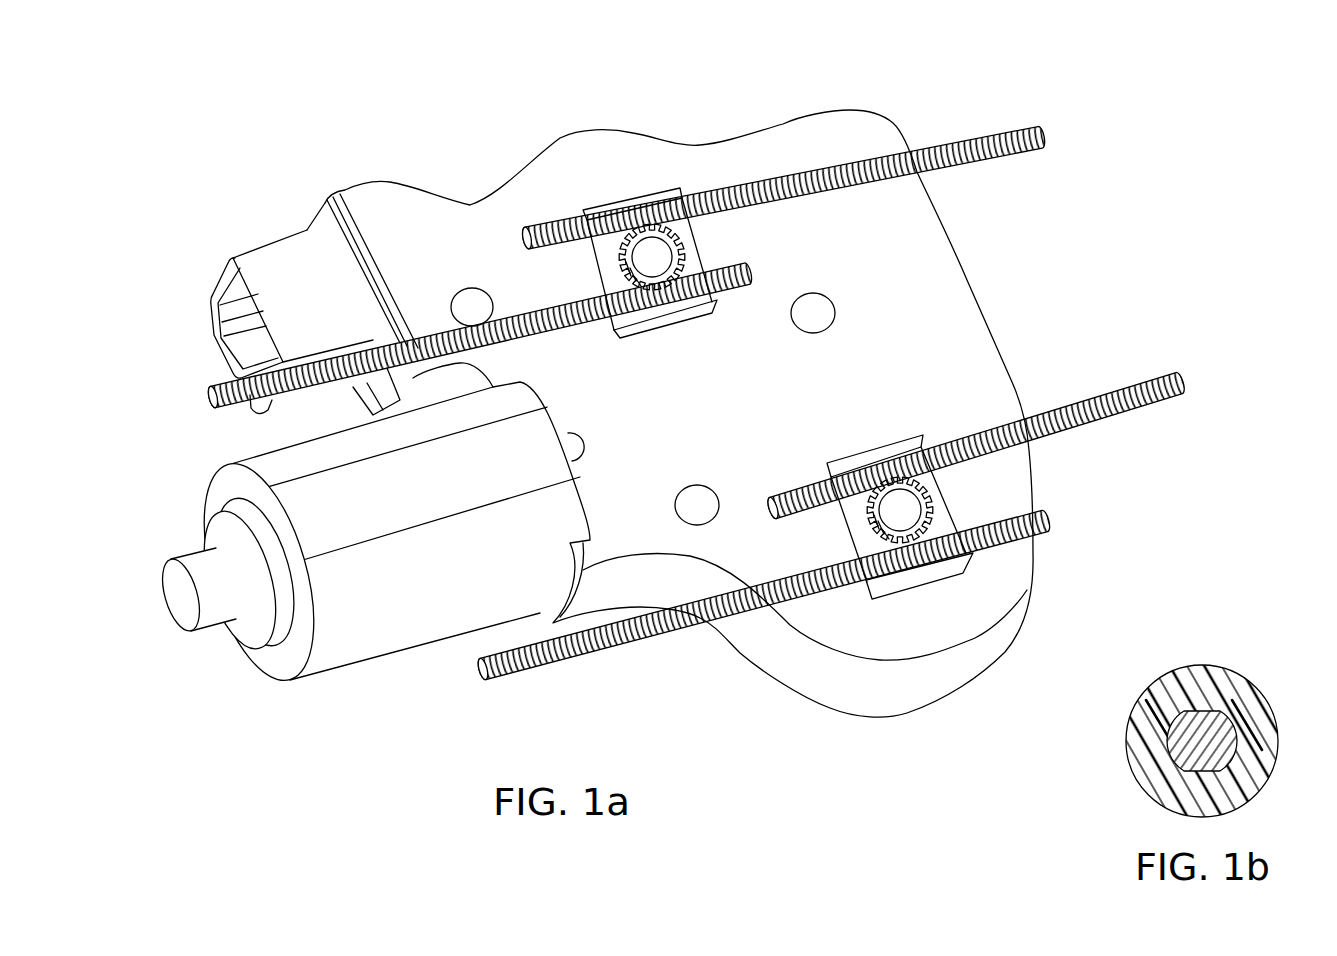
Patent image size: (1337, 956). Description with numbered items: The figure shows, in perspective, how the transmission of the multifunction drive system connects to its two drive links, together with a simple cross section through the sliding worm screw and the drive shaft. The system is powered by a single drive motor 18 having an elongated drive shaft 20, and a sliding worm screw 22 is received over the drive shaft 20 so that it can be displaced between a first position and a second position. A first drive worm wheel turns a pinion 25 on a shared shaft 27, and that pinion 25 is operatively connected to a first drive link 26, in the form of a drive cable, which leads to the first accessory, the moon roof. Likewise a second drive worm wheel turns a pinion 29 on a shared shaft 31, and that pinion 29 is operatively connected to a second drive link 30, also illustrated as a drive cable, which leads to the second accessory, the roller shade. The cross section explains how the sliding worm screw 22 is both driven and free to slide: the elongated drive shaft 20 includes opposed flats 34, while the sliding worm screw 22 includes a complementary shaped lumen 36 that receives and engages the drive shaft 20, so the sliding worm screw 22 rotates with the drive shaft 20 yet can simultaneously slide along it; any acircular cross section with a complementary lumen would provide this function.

In FIG. 1A, the single drive motor 18 is at (382, 627).
In FIG. 1A, the pinion 25 is at (935, 505).
In FIG. 1A, the first drive link 26 is at (1105, 390).
In FIG. 1A, the shared shaft 27 is at (888, 515).
In FIG. 1A, the pinion 29 is at (683, 258).
In FIG. 1A, the second drive link 30 is at (428, 336).
In FIG. 1A, the shared shaft 31 is at (640, 256).
In FIG. 1B, the elongated drive shaft 20 is at (1150, 788).
In FIG. 1B, the sliding worm screw 22 is at (1210, 688).
In FIG. 1B, the opposed flats 34 is at (1197, 710).
In FIG. 1B, the complementary shaped lumen 36 is at (1237, 731).